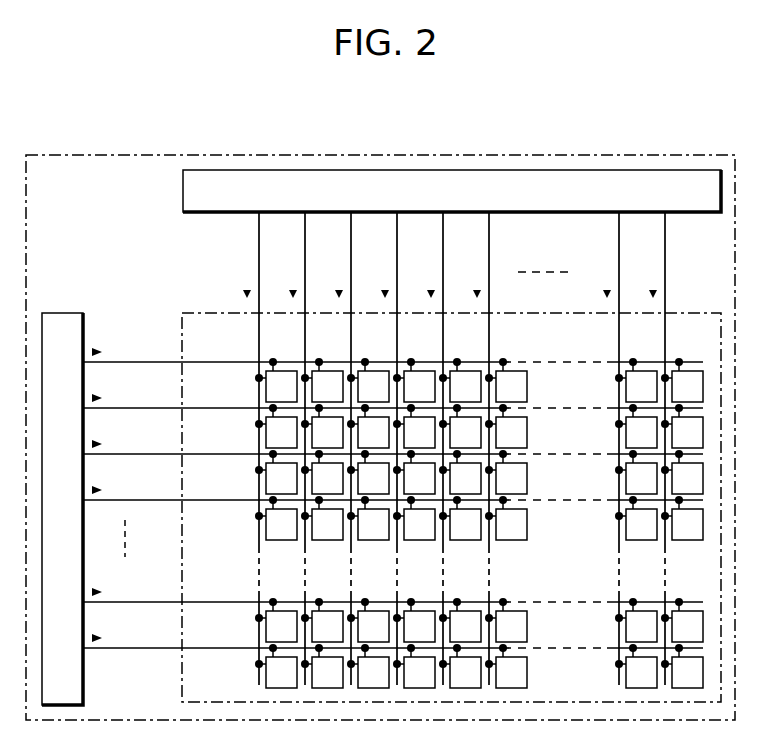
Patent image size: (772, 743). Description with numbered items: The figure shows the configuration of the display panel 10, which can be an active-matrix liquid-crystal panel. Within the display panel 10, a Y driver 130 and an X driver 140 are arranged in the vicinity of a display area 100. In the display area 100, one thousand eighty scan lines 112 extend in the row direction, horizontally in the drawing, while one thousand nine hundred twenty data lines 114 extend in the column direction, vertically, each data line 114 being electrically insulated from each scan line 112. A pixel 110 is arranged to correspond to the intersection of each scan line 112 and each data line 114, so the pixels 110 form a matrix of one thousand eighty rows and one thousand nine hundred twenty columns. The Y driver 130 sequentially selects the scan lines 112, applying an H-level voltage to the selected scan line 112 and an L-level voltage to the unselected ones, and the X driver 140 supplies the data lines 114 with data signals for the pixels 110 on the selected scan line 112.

The display panel 10 is at (80, 154).
The display area 100 is at (212, 313).
The pixel 110 is at (527, 385).
The scan line 112 is at (193, 363).
The data line 114 is at (259, 322).
The Y driver 130 is at (61, 312).
The X driver 140 is at (183, 193).